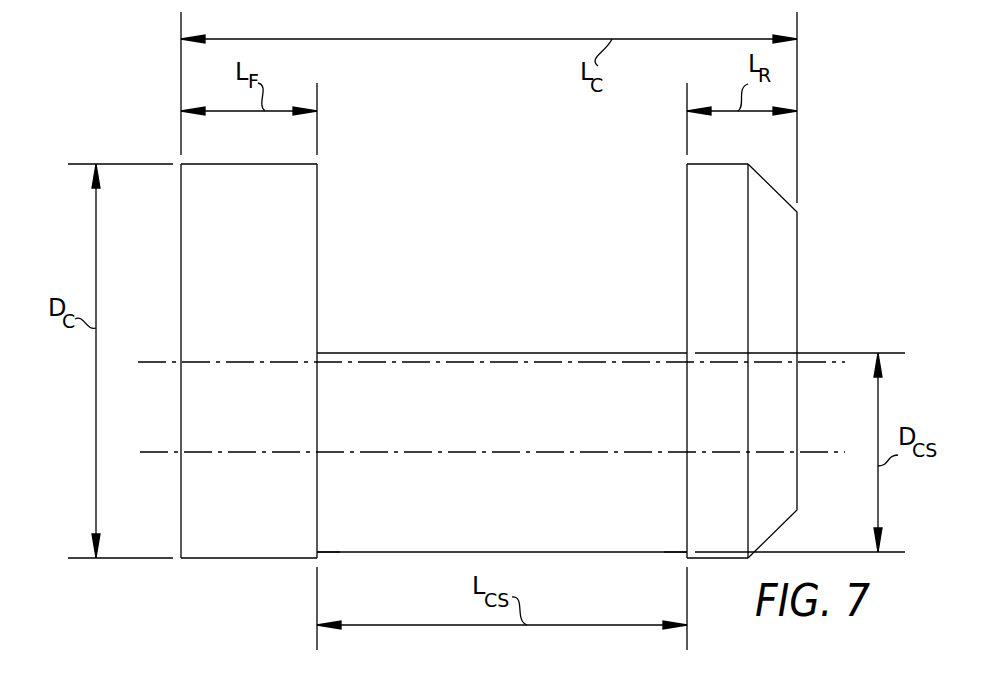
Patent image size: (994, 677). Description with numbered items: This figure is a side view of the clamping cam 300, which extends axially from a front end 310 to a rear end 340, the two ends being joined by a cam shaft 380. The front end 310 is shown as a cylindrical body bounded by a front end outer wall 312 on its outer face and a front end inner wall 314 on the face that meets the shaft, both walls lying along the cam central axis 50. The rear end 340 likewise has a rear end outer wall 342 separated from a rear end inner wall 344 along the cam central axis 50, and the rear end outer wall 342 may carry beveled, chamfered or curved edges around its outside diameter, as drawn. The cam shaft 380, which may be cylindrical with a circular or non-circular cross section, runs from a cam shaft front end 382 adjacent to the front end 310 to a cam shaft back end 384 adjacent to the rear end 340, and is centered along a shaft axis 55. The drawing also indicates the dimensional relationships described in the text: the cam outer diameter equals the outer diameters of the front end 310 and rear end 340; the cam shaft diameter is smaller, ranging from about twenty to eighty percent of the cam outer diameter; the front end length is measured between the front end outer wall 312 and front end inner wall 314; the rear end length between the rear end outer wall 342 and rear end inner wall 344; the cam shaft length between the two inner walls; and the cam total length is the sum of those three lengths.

The clamping cam 300 is at (104, 94).
The front end 310 is at (267, 272).
The front end outer wall 312 is at (181, 310).
The front end inner wall 314 is at (317, 224).
The rear end 340 is at (735, 268).
The rear end outer wall 342 is at (797, 297).
The rear end inner wall 344 is at (687, 217).
The cam shaft 380 is at (495, 430).
The cam shaft front end 382 is at (338, 545).
The cam shaft back end 384 is at (667, 542).
The cam central axis 50 is at (228, 362).
The shaft axis 55 is at (240, 452).